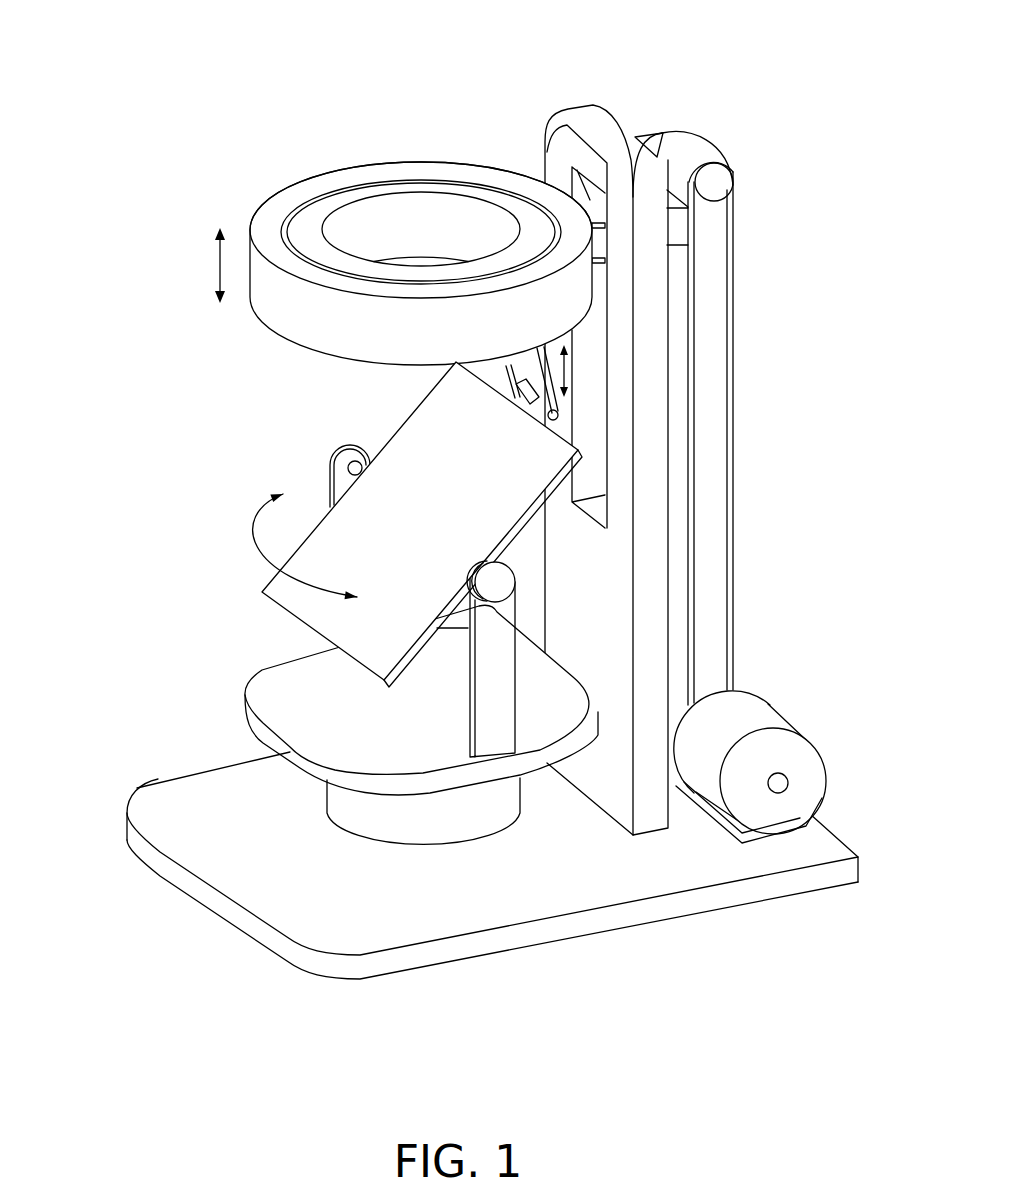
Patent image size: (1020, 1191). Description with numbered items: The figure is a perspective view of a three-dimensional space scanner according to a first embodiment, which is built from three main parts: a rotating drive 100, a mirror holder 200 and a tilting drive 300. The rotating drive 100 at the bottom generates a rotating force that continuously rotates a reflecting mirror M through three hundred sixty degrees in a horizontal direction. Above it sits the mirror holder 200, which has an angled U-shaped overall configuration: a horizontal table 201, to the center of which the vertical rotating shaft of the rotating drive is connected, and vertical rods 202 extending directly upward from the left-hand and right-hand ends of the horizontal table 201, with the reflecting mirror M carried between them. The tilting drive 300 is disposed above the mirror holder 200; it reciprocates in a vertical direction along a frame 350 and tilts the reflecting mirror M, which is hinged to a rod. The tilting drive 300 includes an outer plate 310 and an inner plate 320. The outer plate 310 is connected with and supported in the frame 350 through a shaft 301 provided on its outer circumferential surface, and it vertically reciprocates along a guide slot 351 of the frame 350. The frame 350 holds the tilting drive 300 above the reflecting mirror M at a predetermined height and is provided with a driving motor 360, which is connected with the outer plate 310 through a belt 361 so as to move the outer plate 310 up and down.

The rotating drive 100 is at (233, 812).
The mirror holder 200 is at (327, 811).
The horizontal table 201 is at (352, 748).
The vertical rods 202 is at (487, 728).
The tilting drive 300 is at (528, 425).
The shaft 301 is at (548, 145).
The outer plate 310 is at (403, 228).
The inner plate 320 is at (392, 187).
The frame 350 is at (658, 330).
The guide slot 351 is at (593, 427).
The driving motor 360 is at (773, 717).
The belt 361 is at (713, 513).
The reflecting mirror M is at (412, 427).